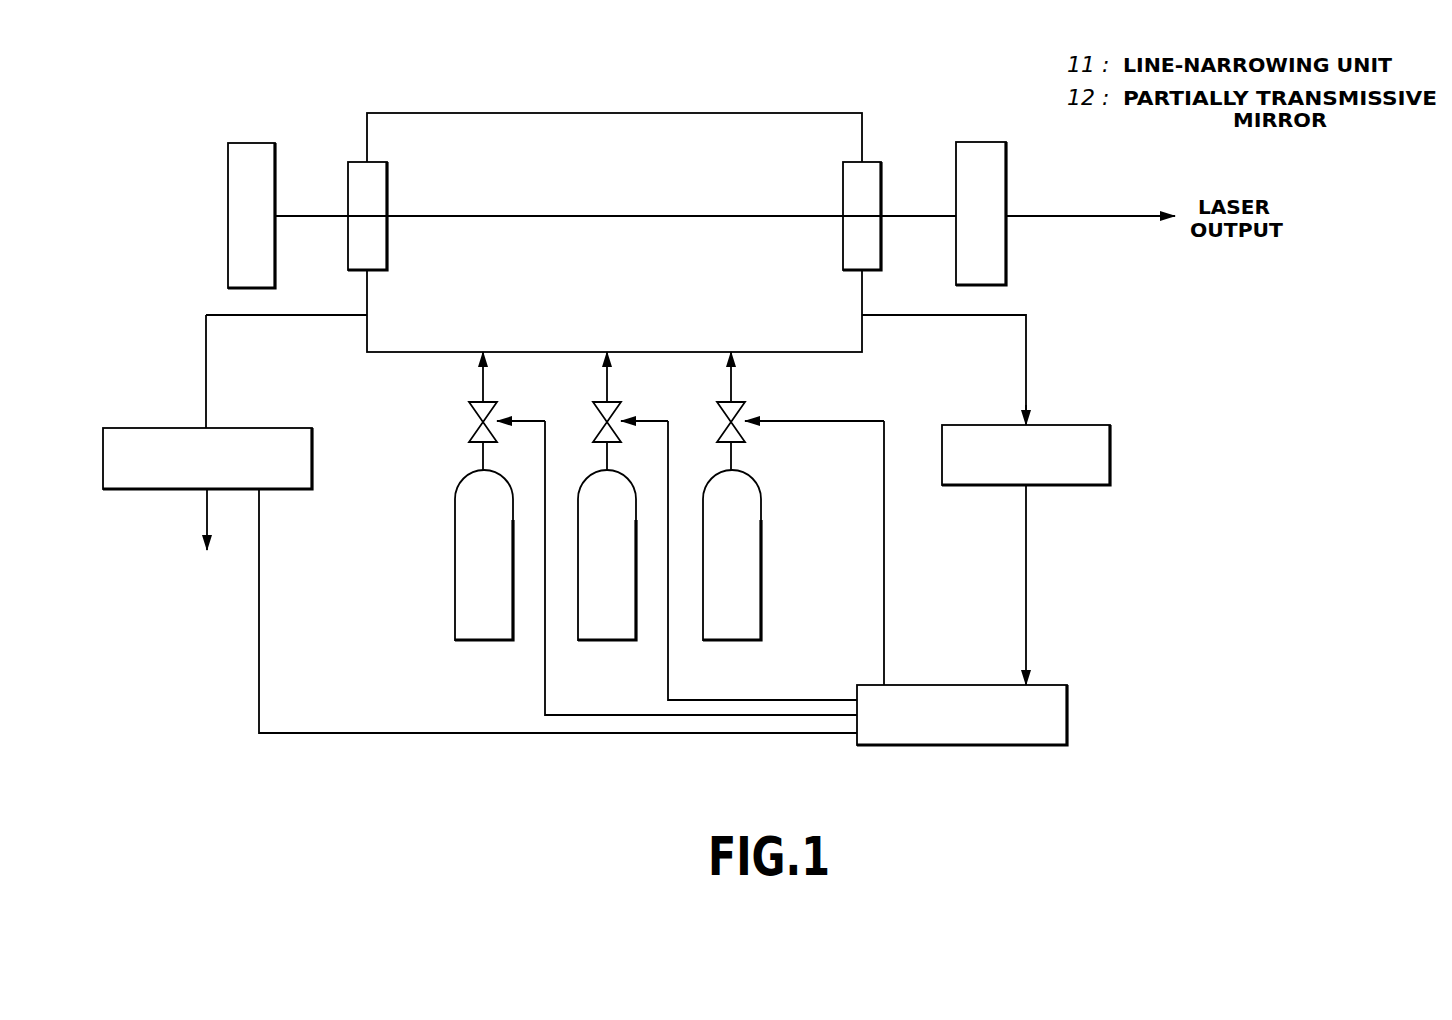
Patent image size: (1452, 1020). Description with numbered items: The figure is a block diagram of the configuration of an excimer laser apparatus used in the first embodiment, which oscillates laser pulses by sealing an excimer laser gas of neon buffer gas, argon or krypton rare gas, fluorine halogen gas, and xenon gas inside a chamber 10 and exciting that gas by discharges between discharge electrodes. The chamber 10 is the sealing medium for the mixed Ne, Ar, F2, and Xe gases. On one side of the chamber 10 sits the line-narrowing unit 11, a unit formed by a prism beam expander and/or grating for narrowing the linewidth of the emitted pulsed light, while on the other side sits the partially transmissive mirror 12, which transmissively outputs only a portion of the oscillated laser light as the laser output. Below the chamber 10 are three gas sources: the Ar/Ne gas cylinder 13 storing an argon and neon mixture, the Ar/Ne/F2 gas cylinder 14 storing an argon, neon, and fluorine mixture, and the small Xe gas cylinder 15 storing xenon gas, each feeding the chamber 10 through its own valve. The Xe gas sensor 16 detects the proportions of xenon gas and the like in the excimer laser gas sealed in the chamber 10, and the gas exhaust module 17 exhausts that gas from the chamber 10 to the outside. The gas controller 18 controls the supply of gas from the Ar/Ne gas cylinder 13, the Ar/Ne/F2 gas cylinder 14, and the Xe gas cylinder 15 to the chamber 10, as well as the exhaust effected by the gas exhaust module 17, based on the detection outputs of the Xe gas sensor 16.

The chamber 10 is at (657, 113).
The line-narrowing unit 11 is at (253, 143).
The partially transmissive mirror 12 is at (974, 142).
The Ar/Ne gas cylinder 13 is at (607, 640).
The Ar/Ne/F2 gas cylinder 14 is at (731, 640).
The Xe gas cylinder 15 is at (483, 640).
The Xe gas sensor 16 is at (1110, 452).
The gas exhaust module 17 is at (312, 456).
The gas controller 18 is at (1067, 712).